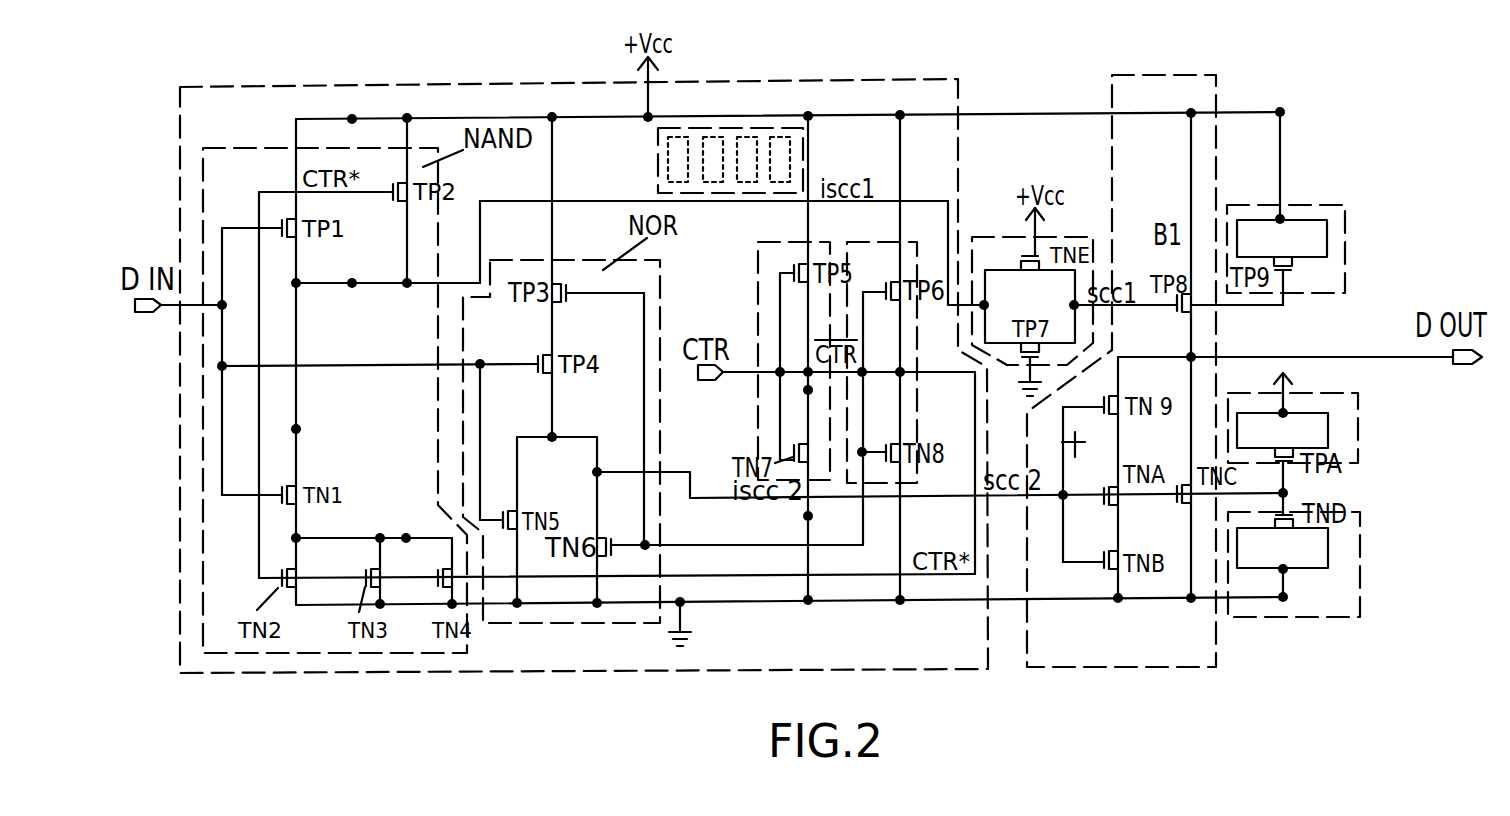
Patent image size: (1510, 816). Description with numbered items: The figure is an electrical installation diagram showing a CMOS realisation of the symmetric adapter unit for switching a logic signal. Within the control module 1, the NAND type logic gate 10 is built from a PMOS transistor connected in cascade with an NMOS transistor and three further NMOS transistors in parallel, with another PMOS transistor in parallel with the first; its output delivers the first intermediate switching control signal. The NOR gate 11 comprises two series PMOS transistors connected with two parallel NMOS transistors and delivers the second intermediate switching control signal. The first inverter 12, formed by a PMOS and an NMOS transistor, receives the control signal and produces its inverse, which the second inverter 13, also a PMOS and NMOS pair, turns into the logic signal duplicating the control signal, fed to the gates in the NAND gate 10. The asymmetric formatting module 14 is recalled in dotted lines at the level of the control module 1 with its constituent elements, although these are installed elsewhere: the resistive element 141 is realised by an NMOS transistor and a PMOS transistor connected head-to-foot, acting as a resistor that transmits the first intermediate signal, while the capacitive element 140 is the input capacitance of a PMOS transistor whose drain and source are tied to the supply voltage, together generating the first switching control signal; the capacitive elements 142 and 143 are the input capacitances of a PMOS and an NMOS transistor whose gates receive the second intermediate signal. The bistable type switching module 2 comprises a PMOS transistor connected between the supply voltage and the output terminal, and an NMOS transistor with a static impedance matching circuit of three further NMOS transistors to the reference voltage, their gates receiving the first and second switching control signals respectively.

The control module 1 is at (192, 117).
The NAND type logic gate 10 is at (237, 162).
The NOR gate 11 is at (535, 263).
The first inverter 12 is at (767, 283).
The second inverter 13 is at (908, 393).
The asymmetric formatting module 14 is at (658, 153).
The capacitive element 140 is at (783, 158).
The resistive element 141 is at (677, 150).
The capacitive element 142 is at (713, 147).
The capacitive element 143 is at (752, 145).
The bistable type switching module 2 is at (1112, 647).